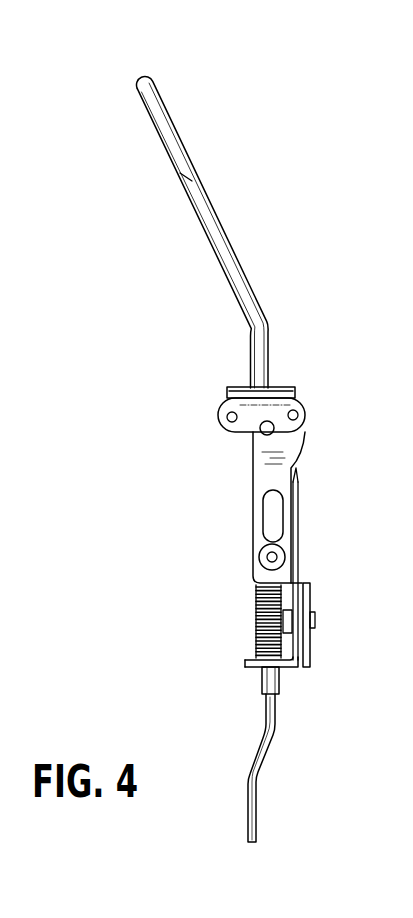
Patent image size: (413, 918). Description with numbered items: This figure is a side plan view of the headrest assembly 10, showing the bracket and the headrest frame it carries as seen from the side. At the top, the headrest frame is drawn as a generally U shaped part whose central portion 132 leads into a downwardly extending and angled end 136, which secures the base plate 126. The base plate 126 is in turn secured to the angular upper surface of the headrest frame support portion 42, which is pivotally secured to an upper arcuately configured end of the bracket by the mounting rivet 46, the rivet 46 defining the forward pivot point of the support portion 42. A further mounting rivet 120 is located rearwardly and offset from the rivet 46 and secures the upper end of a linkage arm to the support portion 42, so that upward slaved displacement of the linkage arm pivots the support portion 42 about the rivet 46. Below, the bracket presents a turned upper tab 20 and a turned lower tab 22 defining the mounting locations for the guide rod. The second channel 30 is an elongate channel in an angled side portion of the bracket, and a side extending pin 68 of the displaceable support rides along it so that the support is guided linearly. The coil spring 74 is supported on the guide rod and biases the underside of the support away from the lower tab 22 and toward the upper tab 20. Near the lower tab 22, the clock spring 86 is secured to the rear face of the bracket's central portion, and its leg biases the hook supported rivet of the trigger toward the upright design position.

The headrest assembly 10 is at (175, 403).
The central portion 132 is at (143, 82).
The second downwardly extending and angled end 136 is at (187, 180).
The base plate 126 is at (237, 386).
The mounting rivet 120 is at (299, 414).
The mounting rivet 46 is at (227, 417).
The headrest frame support portion 42 is at (272, 403).
The upper tab 20 is at (248, 471).
The second channel 30 is at (268, 511).
The side extending pin 68 is at (272, 557).
The coil spring 74 is at (258, 639).
The lower tab 22 is at (245, 663).
The clock spring 86 is at (313, 641).